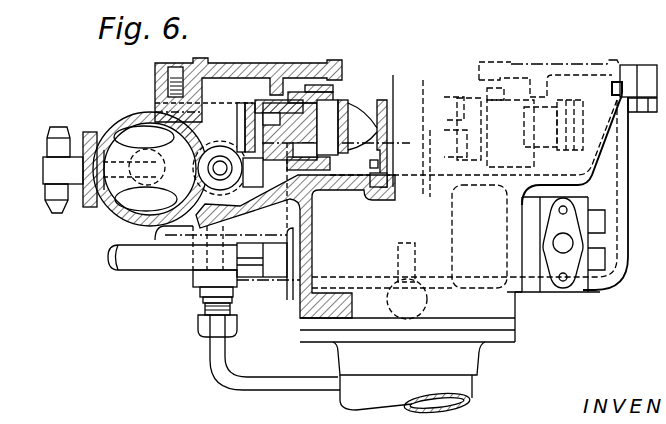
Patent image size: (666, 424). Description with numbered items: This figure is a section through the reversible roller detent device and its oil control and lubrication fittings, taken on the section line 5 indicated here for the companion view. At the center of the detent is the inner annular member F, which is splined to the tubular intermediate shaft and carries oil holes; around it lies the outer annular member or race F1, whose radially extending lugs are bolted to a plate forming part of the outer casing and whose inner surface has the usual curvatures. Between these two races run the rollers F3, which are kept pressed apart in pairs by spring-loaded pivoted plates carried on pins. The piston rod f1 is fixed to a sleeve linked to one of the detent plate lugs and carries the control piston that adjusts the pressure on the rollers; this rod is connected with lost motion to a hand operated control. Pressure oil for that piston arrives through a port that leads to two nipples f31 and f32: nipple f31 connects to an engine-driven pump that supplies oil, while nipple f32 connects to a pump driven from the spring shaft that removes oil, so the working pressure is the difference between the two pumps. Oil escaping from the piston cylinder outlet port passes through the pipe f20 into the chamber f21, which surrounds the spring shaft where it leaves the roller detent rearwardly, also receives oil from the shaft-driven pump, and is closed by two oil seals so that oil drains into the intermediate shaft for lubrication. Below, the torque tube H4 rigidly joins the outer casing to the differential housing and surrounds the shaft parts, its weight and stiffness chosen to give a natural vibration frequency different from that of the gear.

The section line 5— 5 is at (80, 169).
The nipple f31 is at (58, 132).
The nipple f32 is at (56, 215).
The piston rod f1 is at (220, 167).
The outer annular member or race F1 is at (302, 105).
The rollers F3 is at (334, 110).
The inner annular member F is at (352, 102).
The chamber f21 is at (380, 220).
The pipe f20 is at (272, 387).
The torque tube H4 is at (409, 378).